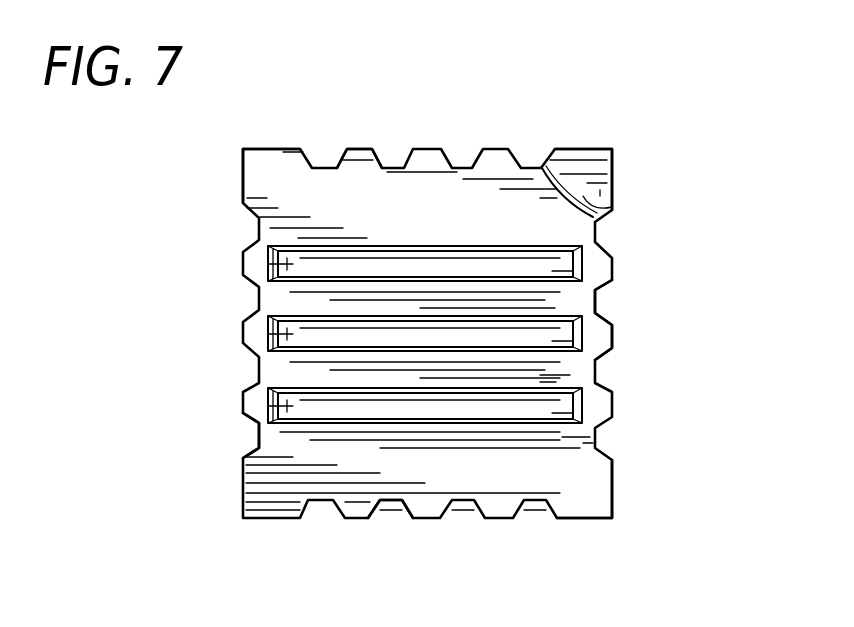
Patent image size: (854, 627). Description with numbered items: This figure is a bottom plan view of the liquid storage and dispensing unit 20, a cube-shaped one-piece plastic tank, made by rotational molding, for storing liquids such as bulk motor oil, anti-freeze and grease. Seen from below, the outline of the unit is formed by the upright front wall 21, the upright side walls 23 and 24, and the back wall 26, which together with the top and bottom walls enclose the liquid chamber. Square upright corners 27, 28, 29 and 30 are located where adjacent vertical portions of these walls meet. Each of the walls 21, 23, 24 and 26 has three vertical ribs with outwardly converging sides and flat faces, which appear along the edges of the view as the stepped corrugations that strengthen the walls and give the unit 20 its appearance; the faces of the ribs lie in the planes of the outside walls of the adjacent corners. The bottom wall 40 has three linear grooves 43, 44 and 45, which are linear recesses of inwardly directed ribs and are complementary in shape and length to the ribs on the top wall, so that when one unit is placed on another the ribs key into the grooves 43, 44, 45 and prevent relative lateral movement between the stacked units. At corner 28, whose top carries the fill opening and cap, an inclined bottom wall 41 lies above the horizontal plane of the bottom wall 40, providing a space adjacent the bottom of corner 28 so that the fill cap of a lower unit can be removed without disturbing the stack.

The liquid storage and dispensing unit 20 is at (624, 126).
The front wall 21 is at (361, 149).
The side wall 23 is at (259, 431).
The side wall 24 is at (612, 332).
The back wall 26 is at (420, 518).
The square upright corner 27 is at (243, 160).
The square upright corner 28 is at (612, 173).
The square upright corner 29 is at (612, 495).
The square upright corner 30 is at (243, 488).
The bottom wall 40 is at (555, 468).
The inclined bottom wall 41 is at (612, 212).
The linear groove 43 is at (268, 264).
The linear groove 44 is at (268, 334).
The linear groove 45 is at (268, 406).